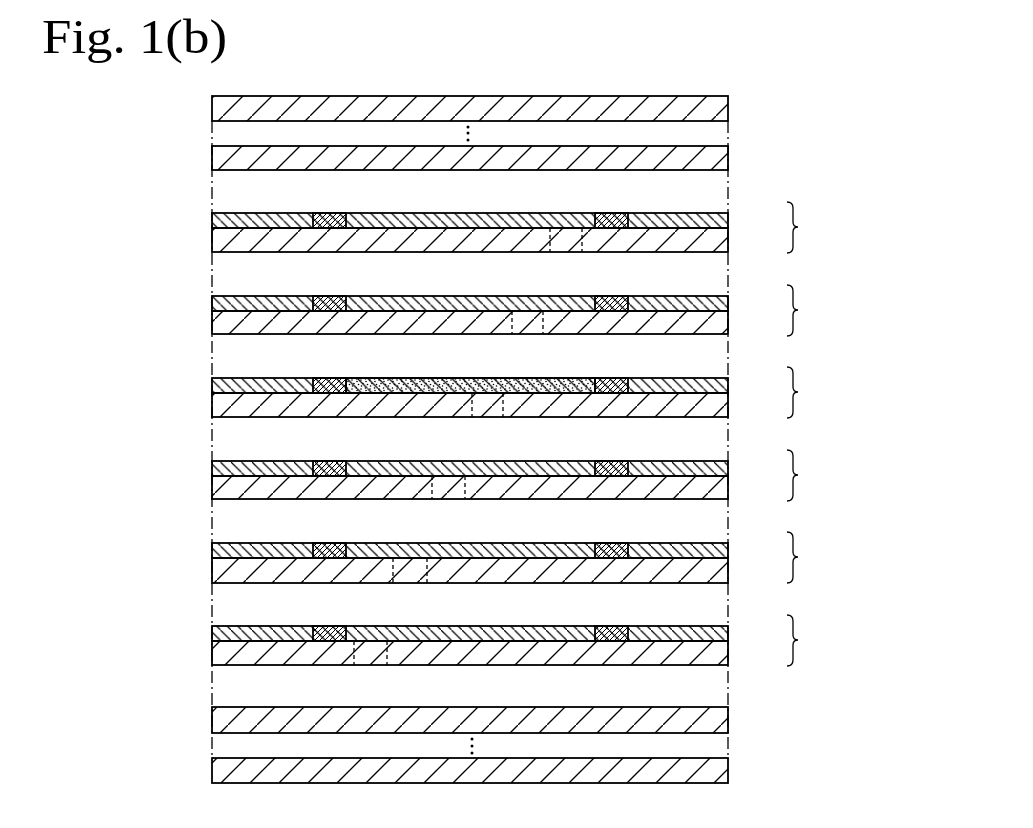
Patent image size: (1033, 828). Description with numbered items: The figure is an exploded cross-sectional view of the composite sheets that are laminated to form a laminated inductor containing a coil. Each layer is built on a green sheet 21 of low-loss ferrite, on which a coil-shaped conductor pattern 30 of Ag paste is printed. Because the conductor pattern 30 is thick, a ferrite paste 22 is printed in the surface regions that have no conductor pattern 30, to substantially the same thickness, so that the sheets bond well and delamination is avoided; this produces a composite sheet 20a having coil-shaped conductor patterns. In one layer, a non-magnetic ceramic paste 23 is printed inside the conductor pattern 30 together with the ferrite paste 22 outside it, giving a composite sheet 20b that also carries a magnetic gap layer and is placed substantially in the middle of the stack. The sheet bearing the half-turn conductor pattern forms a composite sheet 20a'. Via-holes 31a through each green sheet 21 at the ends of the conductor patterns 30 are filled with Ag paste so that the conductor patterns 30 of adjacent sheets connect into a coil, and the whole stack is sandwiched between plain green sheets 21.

The green sheet 21 is at (498, 437).
The ferrite paste 22 is at (498, 414).
The coil-shaped conductor pattern 30 is at (487, 414).
The non-magnetic ceramic paste 23 is at (448, 378).
The via-hole 31a is at (565, 238).
The composite sheet having coil-shaped conductor patterns 20a is at (810, 392).
The composite sheet having coil-shaped conductor patterns and a magnetic gap layer 20b is at (810, 392).
The composite sheet having coil-shaped conductor patterns 20a' is at (812, 640).